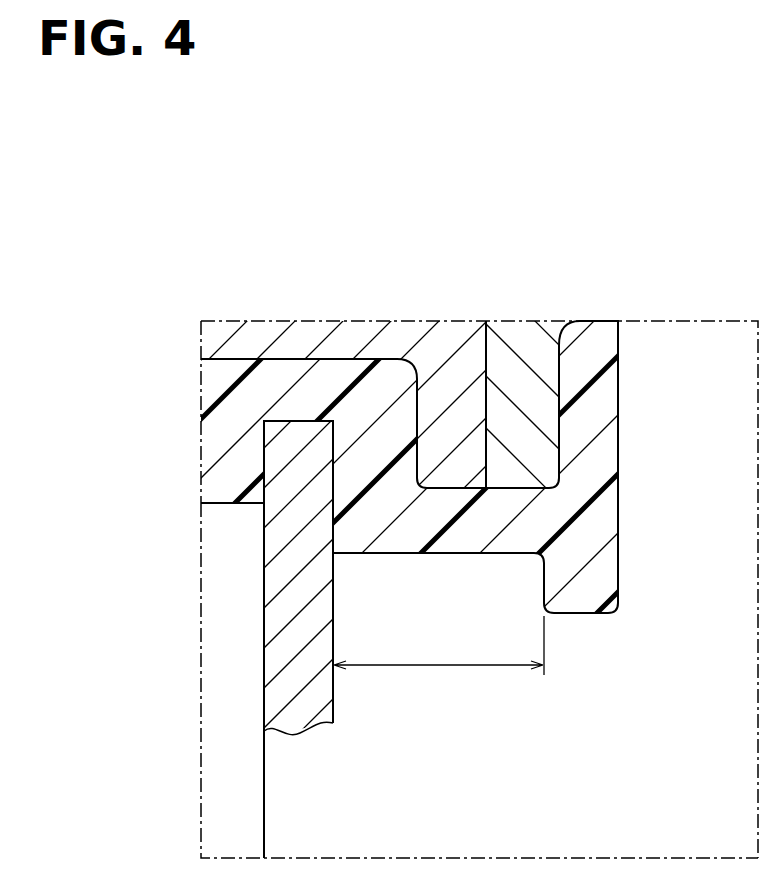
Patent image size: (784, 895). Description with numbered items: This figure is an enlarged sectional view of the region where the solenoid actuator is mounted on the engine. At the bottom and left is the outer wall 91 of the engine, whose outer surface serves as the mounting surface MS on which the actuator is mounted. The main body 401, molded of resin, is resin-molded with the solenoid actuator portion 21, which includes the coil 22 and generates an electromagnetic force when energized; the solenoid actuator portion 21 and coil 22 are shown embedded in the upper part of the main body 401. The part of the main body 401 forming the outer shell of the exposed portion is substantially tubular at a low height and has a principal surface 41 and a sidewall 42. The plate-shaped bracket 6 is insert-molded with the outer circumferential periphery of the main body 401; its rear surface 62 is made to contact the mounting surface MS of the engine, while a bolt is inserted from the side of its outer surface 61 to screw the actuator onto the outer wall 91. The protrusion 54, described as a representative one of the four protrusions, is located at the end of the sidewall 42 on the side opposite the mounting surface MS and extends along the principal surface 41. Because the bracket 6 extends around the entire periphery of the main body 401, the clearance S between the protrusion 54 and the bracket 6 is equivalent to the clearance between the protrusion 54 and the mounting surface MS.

The main body 401 is at (392, 483).
The principal surface 41 is at (392, 513).
The sidewall 42 is at (397, 556).
The protrusion 54 is at (585, 597).
The solenoid actuator portion 21 is at (458, 345).
The coil 22 is at (512, 345).
The bracket 6 is at (326, 596).
The outer surface 61 is at (333, 712).
The rear surface 62 is at (262, 702).
The outer wall 91 is at (238, 787).
The mounting surface MS is at (264, 798).
The clearance S is at (439, 645).